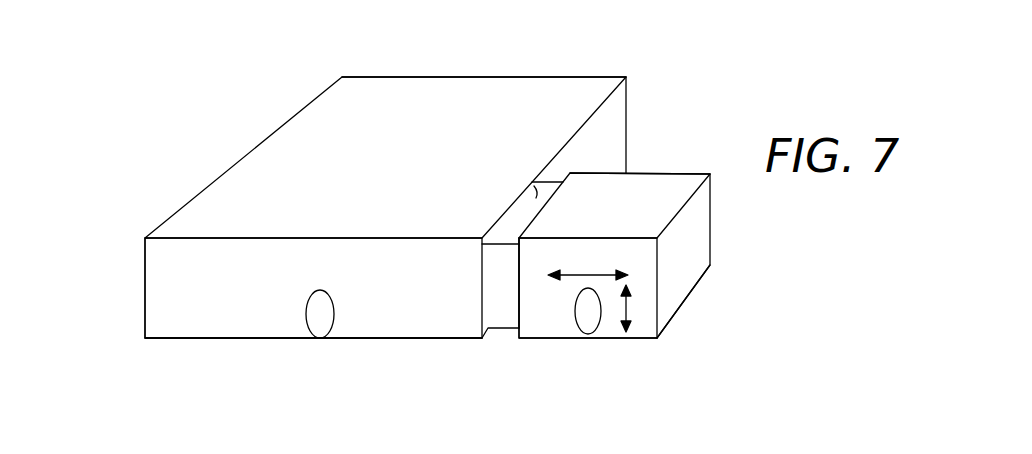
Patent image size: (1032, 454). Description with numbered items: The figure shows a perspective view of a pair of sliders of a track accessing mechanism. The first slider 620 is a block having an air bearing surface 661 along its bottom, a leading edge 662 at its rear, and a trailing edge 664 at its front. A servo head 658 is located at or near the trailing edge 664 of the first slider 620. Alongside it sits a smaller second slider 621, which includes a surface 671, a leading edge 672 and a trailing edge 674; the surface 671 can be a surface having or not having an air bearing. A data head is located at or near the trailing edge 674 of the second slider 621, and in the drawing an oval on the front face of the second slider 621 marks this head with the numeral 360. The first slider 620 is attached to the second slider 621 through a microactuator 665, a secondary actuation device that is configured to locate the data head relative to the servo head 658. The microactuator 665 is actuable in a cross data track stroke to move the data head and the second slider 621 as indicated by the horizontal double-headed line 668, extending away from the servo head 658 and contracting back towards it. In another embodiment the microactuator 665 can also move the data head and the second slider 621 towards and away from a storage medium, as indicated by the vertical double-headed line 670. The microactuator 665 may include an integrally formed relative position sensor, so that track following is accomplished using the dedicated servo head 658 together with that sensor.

The first slider 620 is at (272, 132).
The leading edge 662 is at (502, 77).
The trailing edge 664 is at (183, 287).
The air bearing surface 661 is at (392, 338).
The servo head 658 is at (321, 316).
The microactuator 665 is at (532, 182).
The second slider 621 is at (710, 220).
The leading edge 672 is at (653, 173).
The surface 671 is at (672, 317).
The trailing edge 674 is at (552, 308).
The opening 360 is at (587, 327).
The line 668 is at (600, 273).
The line 670 is at (630, 307).